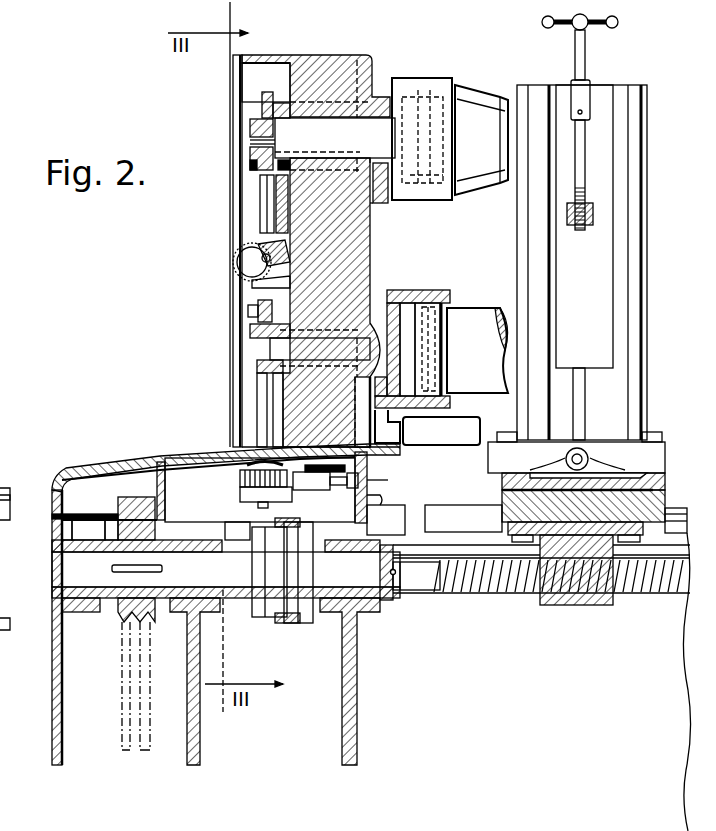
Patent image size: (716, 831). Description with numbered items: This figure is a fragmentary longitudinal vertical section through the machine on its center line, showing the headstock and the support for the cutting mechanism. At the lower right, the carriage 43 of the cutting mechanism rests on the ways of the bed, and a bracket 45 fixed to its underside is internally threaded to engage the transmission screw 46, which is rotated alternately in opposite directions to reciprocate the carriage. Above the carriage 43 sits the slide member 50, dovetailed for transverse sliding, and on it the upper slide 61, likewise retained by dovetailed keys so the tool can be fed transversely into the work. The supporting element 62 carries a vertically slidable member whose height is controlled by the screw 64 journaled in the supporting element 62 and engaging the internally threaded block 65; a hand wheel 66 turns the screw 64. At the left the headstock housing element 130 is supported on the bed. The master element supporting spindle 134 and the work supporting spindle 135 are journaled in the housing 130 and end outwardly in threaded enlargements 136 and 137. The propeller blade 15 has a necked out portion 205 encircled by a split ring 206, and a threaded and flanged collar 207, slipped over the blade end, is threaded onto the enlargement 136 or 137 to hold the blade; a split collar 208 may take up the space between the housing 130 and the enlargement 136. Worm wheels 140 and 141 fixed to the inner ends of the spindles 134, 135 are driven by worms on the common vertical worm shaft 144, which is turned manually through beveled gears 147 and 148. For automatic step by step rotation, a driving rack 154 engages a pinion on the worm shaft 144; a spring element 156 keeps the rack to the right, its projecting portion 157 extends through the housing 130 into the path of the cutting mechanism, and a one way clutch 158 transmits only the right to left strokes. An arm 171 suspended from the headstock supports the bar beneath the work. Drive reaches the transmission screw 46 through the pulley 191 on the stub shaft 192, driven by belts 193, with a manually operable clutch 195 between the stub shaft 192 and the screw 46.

The propeller blade 15 is at (477, 350).
The carriage 43 is at (502, 512).
The bracket 45 is at (568, 600).
The transmission screw 46 is at (490, 596).
The slide member 50 is at (502, 497).
The upper slide 61 is at (495, 470).
The supporting element 62 is at (634, 250).
The screw 64 is at (582, 195).
The internally threaded block 65 is at (593, 218).
The hand wheel 66 is at (612, 25).
The housing element 130 is at (260, 80).
The master element supporting spindle 134 is at (298, 140).
The work supporting spindle 135 is at (294, 345).
The threaded enlargement 136 is at (404, 90).
The threaded enlargement 137 is at (397, 300).
The worm wheel 140 is at (268, 108).
The worm wheel 141 is at (255, 322).
The worm shaft 144 is at (266, 212).
The beveled gear 147 is at (247, 250).
The beveled gear 148 is at (256, 287).
The driving rack 154 is at (318, 490).
The spring element 156 is at (387, 473).
The projecting portion 157 is at (397, 495).
The one way clutch 158 is at (247, 478).
The arm 171 is at (406, 436).
The pulley 191 is at (124, 622).
The stub shaft 192 is at (65, 565).
The belt 193 is at (146, 688).
The clutch 195 is at (290, 624).
The necked out portion 205 is at (432, 330).
The split ring 206 is at (442, 318).
The threaded and flanged collar 207 is at (437, 300).
The split collar 208 is at (380, 97).